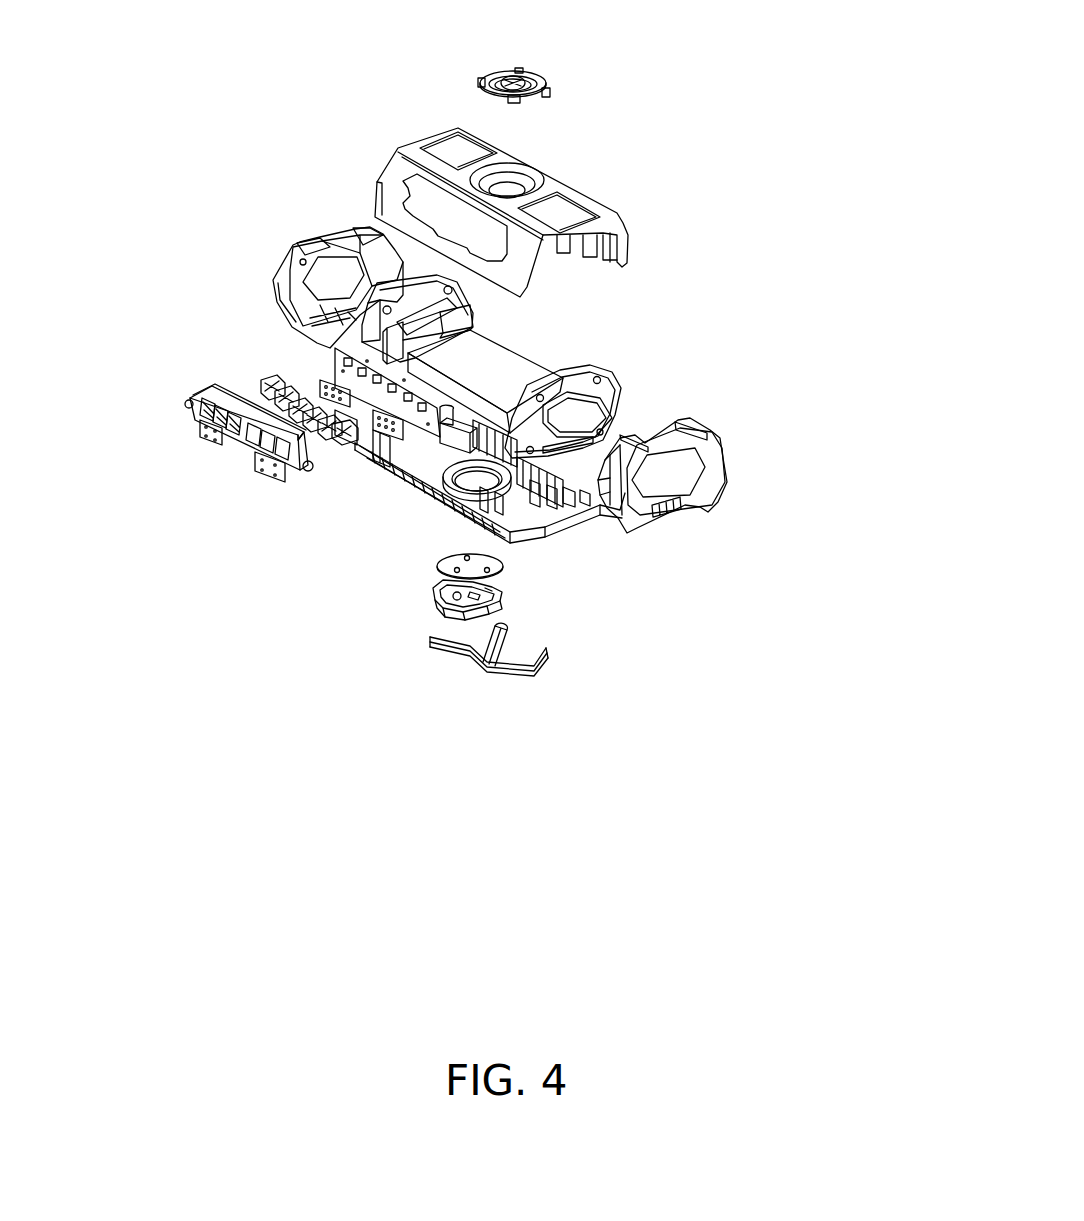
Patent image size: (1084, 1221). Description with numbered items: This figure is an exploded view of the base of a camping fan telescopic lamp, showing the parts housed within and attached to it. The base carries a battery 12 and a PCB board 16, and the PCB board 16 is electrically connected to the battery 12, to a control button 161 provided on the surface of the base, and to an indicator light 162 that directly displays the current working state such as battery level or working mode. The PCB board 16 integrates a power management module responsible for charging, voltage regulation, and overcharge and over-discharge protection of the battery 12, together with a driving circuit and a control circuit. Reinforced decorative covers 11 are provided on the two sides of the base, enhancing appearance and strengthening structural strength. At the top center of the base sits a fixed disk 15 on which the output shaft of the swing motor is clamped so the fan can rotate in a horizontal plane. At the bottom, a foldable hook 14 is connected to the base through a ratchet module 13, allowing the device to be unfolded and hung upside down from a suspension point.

The reinforced decorative cover 11 is at (300, 243).
The battery 12 is at (510, 353).
The ratchet module 13 is at (503, 592).
The foldable hook 14 is at (522, 680).
The fixed disk 15 is at (543, 87).
The PCB board 16 is at (337, 342).
The control button 161 is at (257, 380).
The indicator light 162 is at (331, 415).